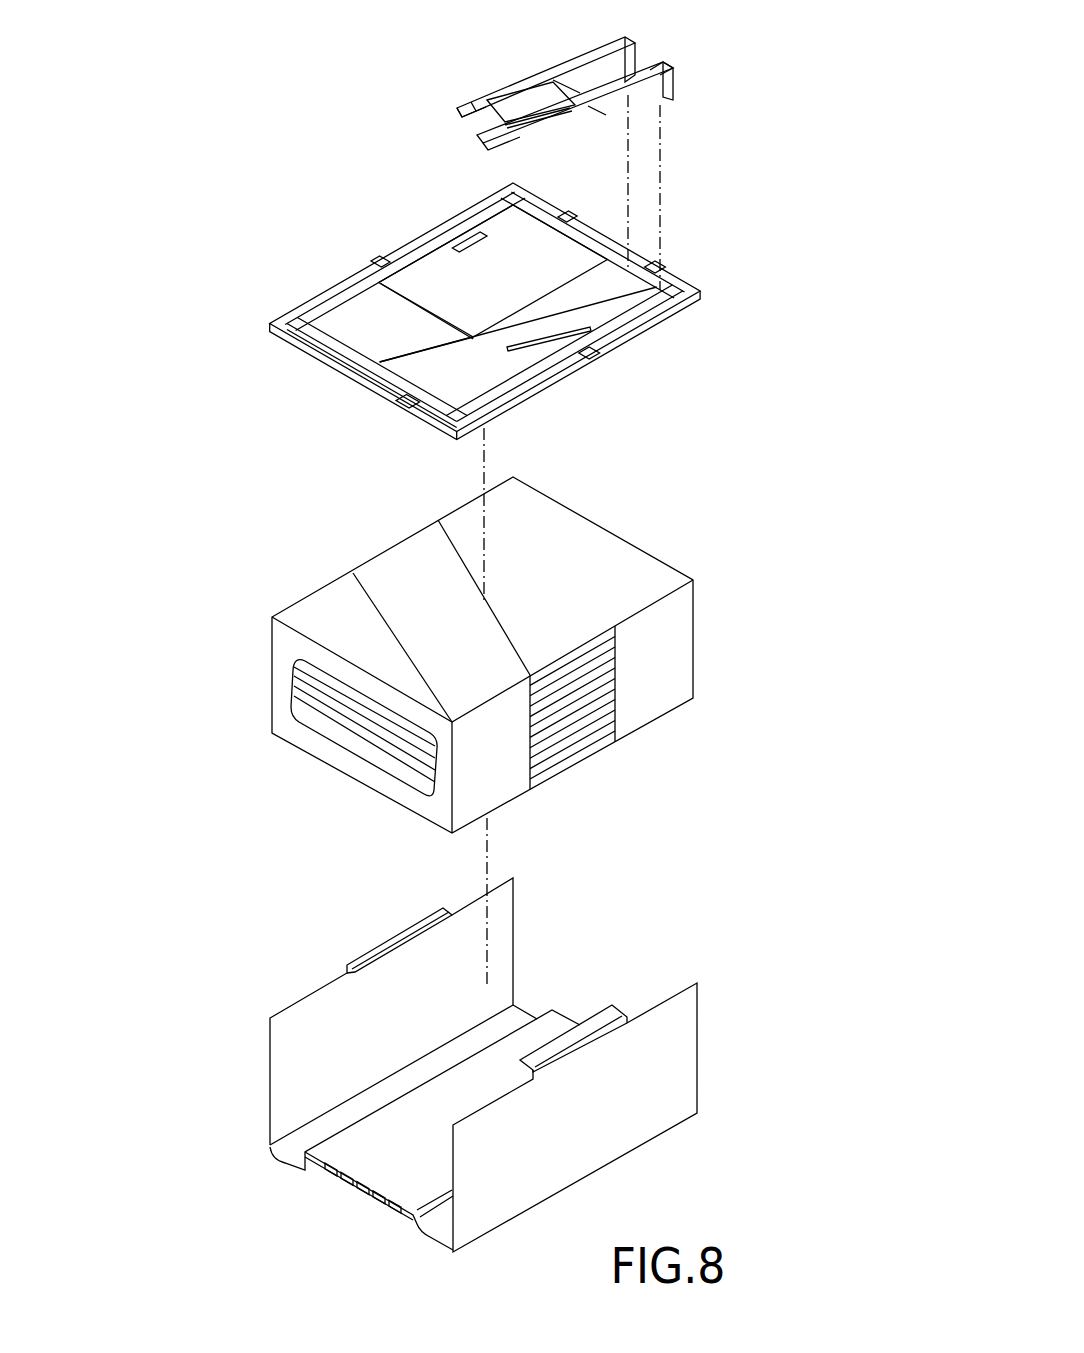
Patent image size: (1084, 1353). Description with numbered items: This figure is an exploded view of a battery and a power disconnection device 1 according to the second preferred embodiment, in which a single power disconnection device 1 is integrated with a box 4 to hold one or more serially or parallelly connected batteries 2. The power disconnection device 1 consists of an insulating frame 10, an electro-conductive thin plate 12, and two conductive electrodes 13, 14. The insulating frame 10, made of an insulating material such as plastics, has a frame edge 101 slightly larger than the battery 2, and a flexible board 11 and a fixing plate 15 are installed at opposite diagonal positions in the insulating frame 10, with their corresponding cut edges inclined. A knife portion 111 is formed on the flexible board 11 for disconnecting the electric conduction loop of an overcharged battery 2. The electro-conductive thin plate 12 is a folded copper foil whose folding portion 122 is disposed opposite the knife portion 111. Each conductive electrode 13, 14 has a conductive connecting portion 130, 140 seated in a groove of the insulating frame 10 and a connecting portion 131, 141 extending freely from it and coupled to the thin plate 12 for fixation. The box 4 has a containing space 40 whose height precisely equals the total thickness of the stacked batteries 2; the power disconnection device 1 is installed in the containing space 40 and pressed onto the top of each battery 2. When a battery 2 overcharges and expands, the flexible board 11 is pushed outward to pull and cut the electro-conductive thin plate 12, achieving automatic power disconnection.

The power disconnection device 1 is at (531, 330).
The battery 2 is at (677, 567).
The box 4 is at (495, 1065).
The insulating frame 10 is at (469, 330).
The flexible board 11 is at (453, 383).
The electro-conductive thin plate 12 is at (589, 116).
The conductive electrode 13 is at (718, 82).
The conductive electrode 14 is at (559, 65).
The fixing plate 15 is at (437, 270).
The containing space 40 is at (323, 1039).
The frame edge 101 is at (583, 335).
The knife portion 111 is at (550, 337).
The folding portion 122 is at (543, 125).
The conductive connecting portion 130 is at (672, 93).
The connecting portion 131 is at (598, 112).
The conductive connecting portion 140 is at (633, 62).
The connecting portion 141 is at (470, 107).